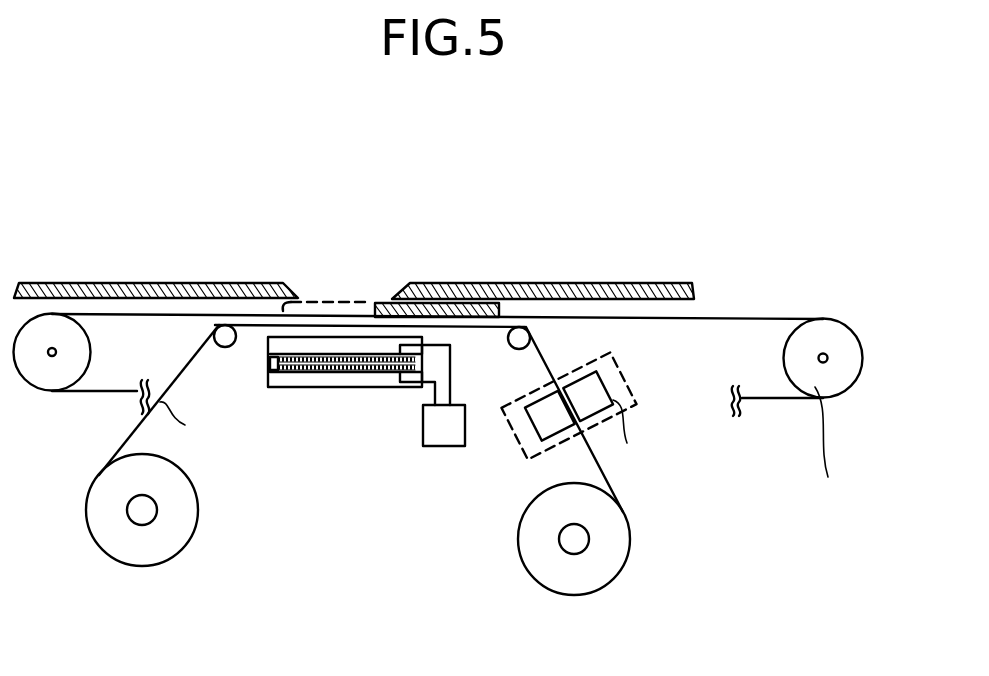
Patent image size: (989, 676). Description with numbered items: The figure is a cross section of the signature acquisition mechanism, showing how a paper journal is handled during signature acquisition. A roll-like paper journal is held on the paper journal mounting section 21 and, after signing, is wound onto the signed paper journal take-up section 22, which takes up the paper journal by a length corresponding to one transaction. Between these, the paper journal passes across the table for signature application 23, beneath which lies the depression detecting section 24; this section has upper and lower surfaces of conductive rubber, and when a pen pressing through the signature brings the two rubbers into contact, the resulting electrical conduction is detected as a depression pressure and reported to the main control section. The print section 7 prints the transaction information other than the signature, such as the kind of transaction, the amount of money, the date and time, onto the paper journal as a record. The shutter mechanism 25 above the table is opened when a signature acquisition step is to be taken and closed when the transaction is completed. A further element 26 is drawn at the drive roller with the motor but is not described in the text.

The print section 7 is at (615, 353).
The paper journal mounting section 21 is at (157, 510).
The signed paper journal take-up section 22 is at (589, 537).
The table for signature application 23 is at (343, 390).
The depression detecting section 24 is at (443, 446).
The shutter mechanism 25 is at (472, 312).
The motor roller 26 is at (847, 392).